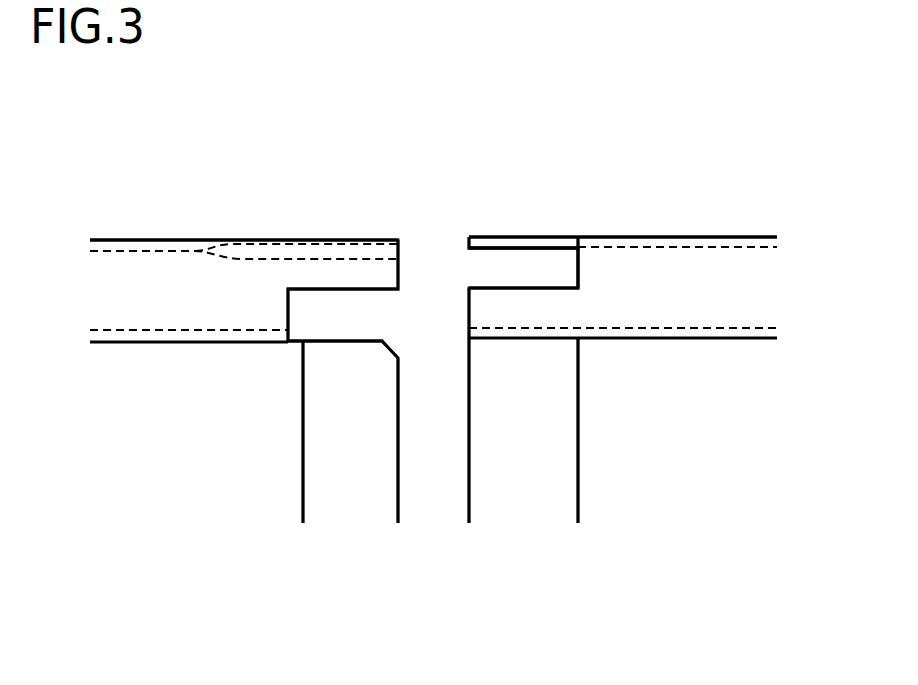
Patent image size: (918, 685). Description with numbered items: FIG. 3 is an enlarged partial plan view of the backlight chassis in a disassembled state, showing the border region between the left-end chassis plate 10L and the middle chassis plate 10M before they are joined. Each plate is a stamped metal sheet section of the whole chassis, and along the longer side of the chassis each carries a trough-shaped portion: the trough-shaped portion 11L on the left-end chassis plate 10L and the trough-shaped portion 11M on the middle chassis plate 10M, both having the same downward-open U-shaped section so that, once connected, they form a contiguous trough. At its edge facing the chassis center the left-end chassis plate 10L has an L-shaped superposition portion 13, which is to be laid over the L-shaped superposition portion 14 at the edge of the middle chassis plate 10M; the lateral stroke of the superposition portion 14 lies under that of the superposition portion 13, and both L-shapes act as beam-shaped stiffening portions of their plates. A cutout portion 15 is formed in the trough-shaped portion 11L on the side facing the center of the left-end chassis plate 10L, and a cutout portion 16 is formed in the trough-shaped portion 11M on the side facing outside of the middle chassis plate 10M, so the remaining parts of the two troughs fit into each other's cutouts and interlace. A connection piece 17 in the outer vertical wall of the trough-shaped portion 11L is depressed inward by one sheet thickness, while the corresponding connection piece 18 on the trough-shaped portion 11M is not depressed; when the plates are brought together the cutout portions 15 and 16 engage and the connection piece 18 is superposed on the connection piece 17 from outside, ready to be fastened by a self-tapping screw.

The left-end chassis plate 10L is at (225, 457).
The middle chassis plate 10M is at (702, 452).
The trough-shaped portion 11L is at (165, 267).
The trough-shaped portion 11M is at (707, 266).
The superposition portion 13 is at (347, 460).
The superposition portion 14 is at (525, 460).
The cutout portion 15 is at (343, 313).
The cutout portion 16 is at (523, 270).
The connection piece 17 is at (345, 248).
The connection piece 18 is at (520, 236).